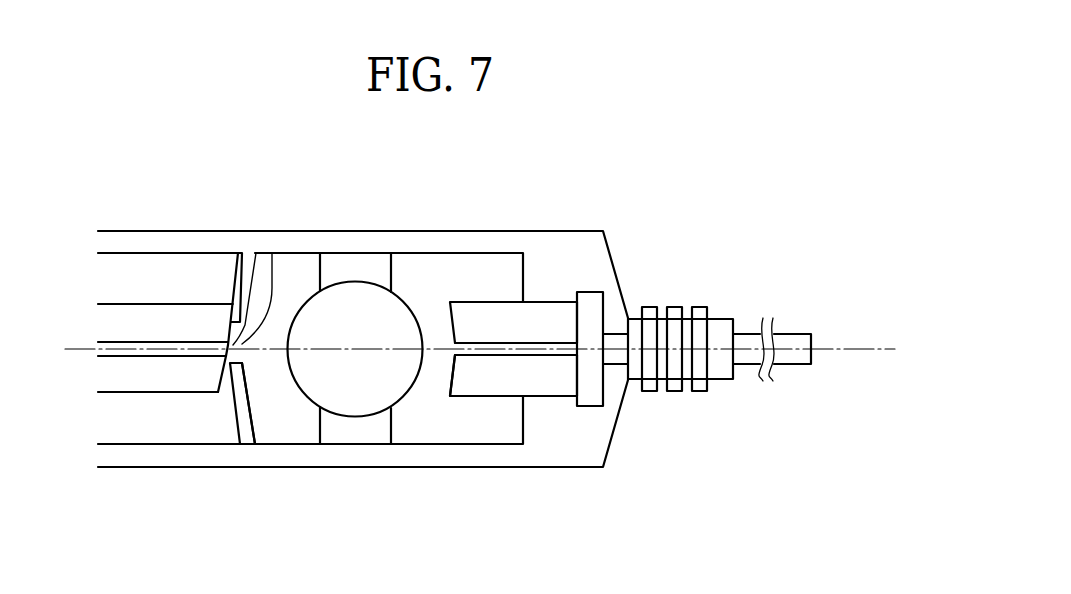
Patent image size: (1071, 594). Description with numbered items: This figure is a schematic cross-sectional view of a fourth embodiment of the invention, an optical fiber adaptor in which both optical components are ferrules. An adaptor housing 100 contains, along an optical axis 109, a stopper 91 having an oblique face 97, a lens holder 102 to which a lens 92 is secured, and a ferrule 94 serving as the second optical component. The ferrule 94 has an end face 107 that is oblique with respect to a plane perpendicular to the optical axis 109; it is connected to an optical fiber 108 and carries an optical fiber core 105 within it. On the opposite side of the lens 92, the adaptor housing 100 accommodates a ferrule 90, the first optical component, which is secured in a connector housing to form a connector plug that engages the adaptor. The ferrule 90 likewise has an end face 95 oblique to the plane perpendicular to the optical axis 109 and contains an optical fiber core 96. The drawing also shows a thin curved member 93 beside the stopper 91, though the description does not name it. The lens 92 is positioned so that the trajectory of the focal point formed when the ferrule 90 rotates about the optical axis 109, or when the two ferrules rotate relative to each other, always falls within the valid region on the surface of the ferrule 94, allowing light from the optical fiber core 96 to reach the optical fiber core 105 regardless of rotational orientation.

The ferrule 90 is at (138, 387).
The stopper 91 is at (249, 405).
The lens 92 is at (362, 400).
The upper claw 93 is at (272, 253).
The ferrule 94 is at (565, 382).
The end face 95 is at (227, 380).
The optical fiber core 96 is at (117, 348).
The oblique face 97 is at (238, 252).
The adaptor housing 100 is at (170, 461).
The lens holder 102 is at (362, 268).
The optical fiber core 105 is at (540, 342).
The end face 107 is at (458, 380).
The optical fiber 108 is at (797, 343).
The optical axis 109 is at (857, 350).